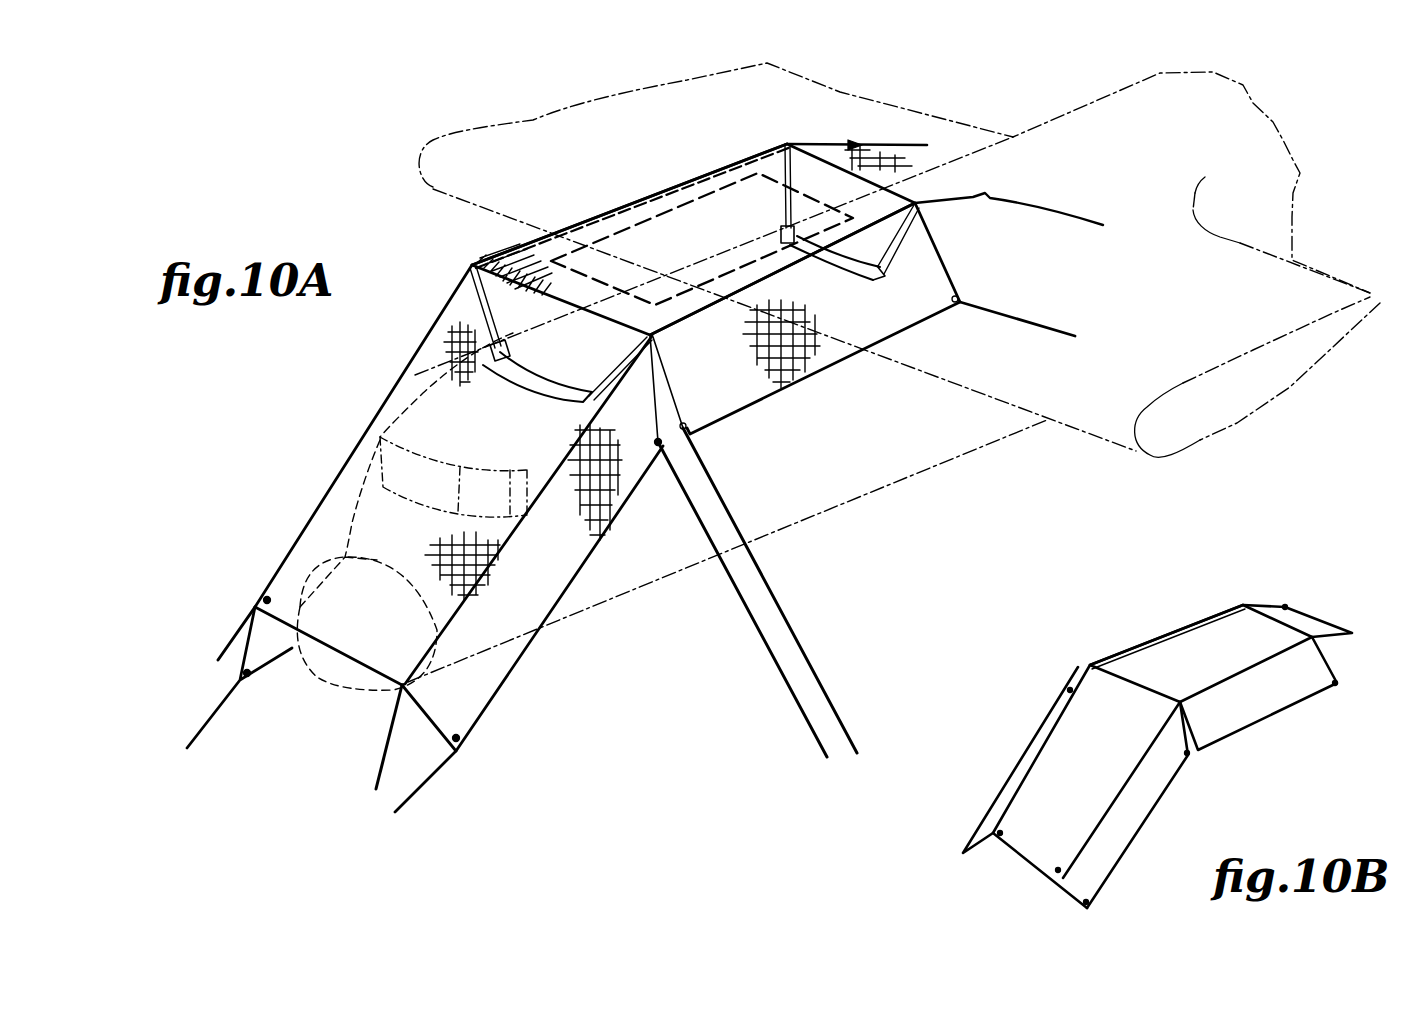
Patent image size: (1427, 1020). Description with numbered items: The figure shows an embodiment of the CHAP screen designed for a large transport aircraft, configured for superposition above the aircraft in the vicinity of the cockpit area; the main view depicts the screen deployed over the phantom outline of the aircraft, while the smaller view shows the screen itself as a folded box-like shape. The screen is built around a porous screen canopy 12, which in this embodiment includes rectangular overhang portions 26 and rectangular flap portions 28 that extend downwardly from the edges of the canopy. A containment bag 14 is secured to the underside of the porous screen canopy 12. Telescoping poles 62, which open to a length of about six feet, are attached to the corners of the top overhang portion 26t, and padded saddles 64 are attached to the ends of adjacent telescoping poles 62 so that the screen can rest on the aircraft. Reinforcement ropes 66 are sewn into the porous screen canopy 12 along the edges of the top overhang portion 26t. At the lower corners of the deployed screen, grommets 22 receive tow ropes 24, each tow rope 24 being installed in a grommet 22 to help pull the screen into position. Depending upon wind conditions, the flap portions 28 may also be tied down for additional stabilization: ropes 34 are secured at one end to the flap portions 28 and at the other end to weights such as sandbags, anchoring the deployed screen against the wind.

In FIG. 10A, the porous screen canopy 12 is at (360, 427).
In FIG. 10B, the porous screen canopy 12 is at (1216, 628).
In FIG. 10A, the containment bag 14 is at (768, 175).
In FIG. 10A, the grommets 22 is at (270, 600).
In FIG. 10A, the tow rope 24 is at (213, 710).
In FIG. 10A, the overhang portions 26 is at (413, 549).
In FIG. 10B, the overhang portions 26 is at (1086, 800).
In FIG. 10A, the top overhang portion 26t is at (520, 243).
In FIG. 10B, the top overhang portion 26t is at (1175, 650).
In FIG. 10A, the flap portions 28 is at (758, 343).
In FIG. 10B, the flap portions 28 is at (1302, 618).
In FIG. 10A, the ropes 34 is at (763, 640).
In FIG. 10A, the telescoping poles 62 is at (792, 170).
In FIG. 10A, the padded saddles 64 is at (532, 382).
In FIG. 10A, the reinforcement ropes 66 is at (680, 177).